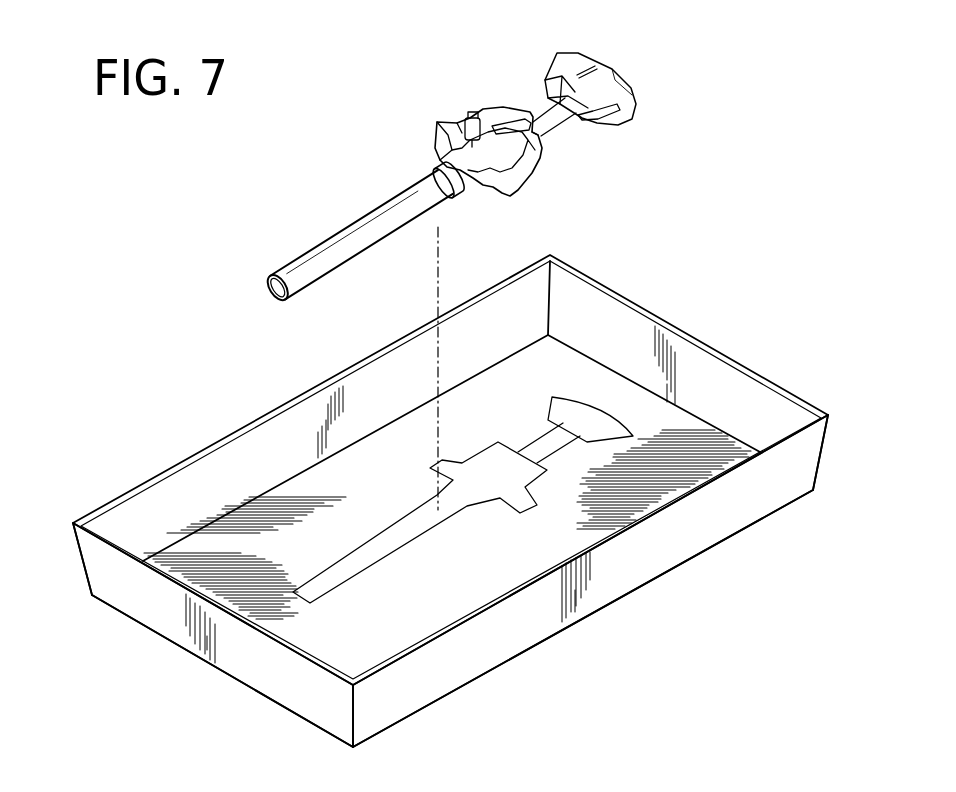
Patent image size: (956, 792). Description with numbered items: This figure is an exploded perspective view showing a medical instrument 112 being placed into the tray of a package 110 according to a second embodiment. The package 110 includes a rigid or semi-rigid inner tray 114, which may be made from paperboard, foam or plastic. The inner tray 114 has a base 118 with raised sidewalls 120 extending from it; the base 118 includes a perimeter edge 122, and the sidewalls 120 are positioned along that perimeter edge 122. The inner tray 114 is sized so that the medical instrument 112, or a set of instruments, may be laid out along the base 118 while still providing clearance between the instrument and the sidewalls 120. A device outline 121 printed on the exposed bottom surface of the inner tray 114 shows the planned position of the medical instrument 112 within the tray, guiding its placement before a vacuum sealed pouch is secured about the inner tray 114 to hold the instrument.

The package 110 is at (448, 503).
The medical instrument 112 is at (462, 123).
The inner tray 114 is at (162, 620).
The base 118 is at (188, 567).
The sidewalls 120 is at (693, 535).
The device outlines 121 is at (607, 415).
The perimeter edge 122 is at (425, 708).